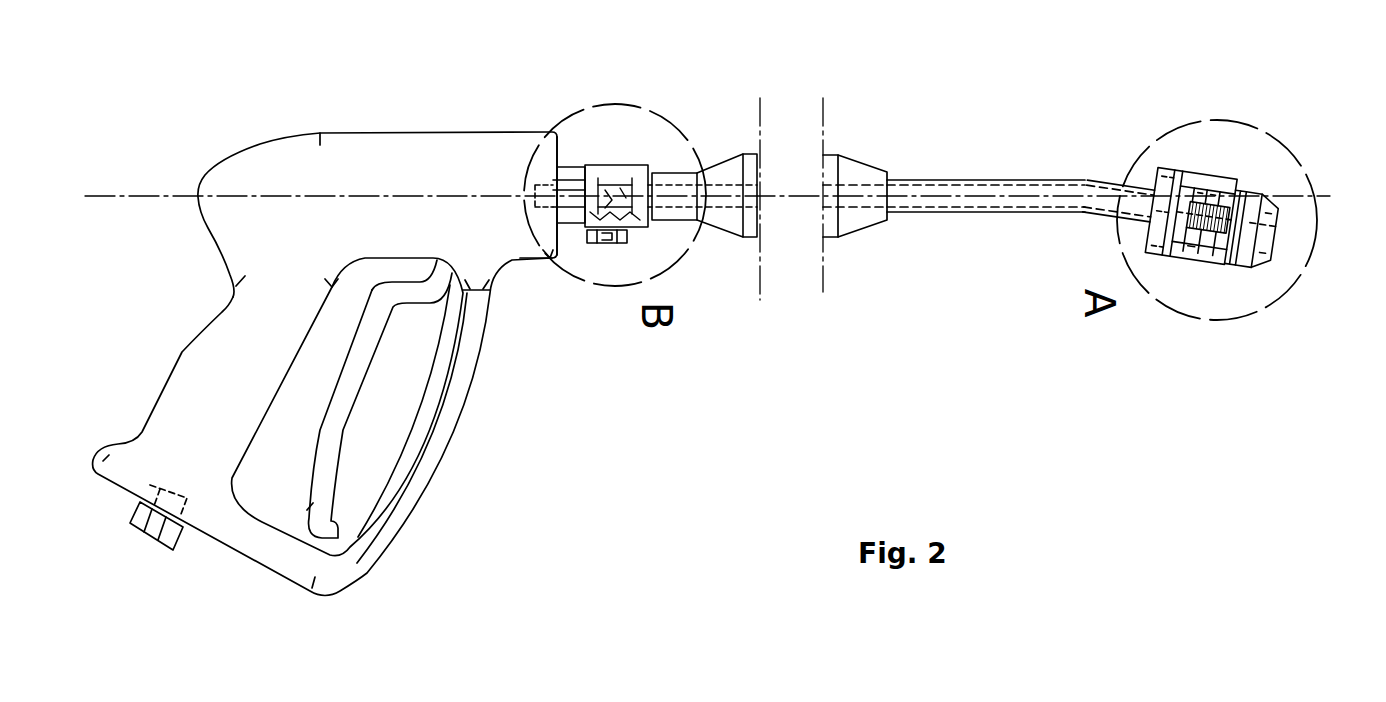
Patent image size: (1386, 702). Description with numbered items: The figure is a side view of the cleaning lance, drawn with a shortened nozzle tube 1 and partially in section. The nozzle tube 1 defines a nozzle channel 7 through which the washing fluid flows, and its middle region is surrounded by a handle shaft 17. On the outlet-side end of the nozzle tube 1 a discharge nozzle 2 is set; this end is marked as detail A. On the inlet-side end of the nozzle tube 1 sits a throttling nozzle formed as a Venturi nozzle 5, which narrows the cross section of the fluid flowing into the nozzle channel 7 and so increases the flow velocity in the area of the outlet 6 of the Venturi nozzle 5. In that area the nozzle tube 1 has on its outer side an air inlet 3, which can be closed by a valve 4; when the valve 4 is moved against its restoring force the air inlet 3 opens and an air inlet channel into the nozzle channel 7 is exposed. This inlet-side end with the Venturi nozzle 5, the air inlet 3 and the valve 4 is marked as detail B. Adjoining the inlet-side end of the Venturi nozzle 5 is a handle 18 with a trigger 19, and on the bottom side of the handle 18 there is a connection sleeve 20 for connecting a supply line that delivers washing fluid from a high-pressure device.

The nozzle tube 1 is at (973, 180).
The discharge nozzle 2 is at (1212, 168).
The air inlet 3 is at (605, 240).
The valve 4 is at (617, 213).
The Venturi nozzle 5 is at (577, 197).
The outlet of the Venturi nozzle 6 is at (612, 197).
The nozzle channel 7 is at (928, 197).
The handle shaft 17 is at (828, 168).
The handle 18 is at (392, 160).
The trigger 19 is at (355, 362).
The connection sleeve 20 is at (158, 522).